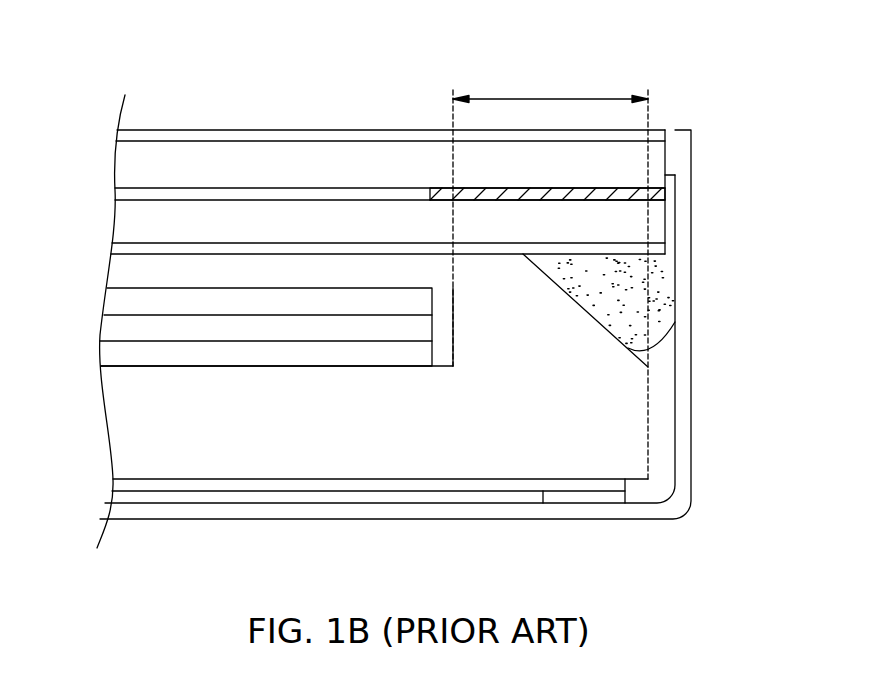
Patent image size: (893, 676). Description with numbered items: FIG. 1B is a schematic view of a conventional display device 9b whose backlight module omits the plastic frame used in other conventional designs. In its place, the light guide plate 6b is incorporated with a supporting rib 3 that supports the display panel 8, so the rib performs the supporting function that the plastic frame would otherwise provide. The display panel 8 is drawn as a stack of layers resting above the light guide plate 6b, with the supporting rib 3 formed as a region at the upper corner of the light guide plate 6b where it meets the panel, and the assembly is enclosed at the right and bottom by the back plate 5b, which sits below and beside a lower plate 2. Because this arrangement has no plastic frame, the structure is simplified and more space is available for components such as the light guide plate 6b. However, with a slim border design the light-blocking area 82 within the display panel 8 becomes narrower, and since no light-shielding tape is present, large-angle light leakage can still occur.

The display device 9b is at (153, 81).
The display panel 8 is at (102, 128).
The light-blocking area 82 is at (447, 190).
The supporting rib 3 is at (580, 329).
The light guide plate 6b is at (127, 423).
The light guide plate 2 is at (465, 438).
The frame 5b is at (683, 487).